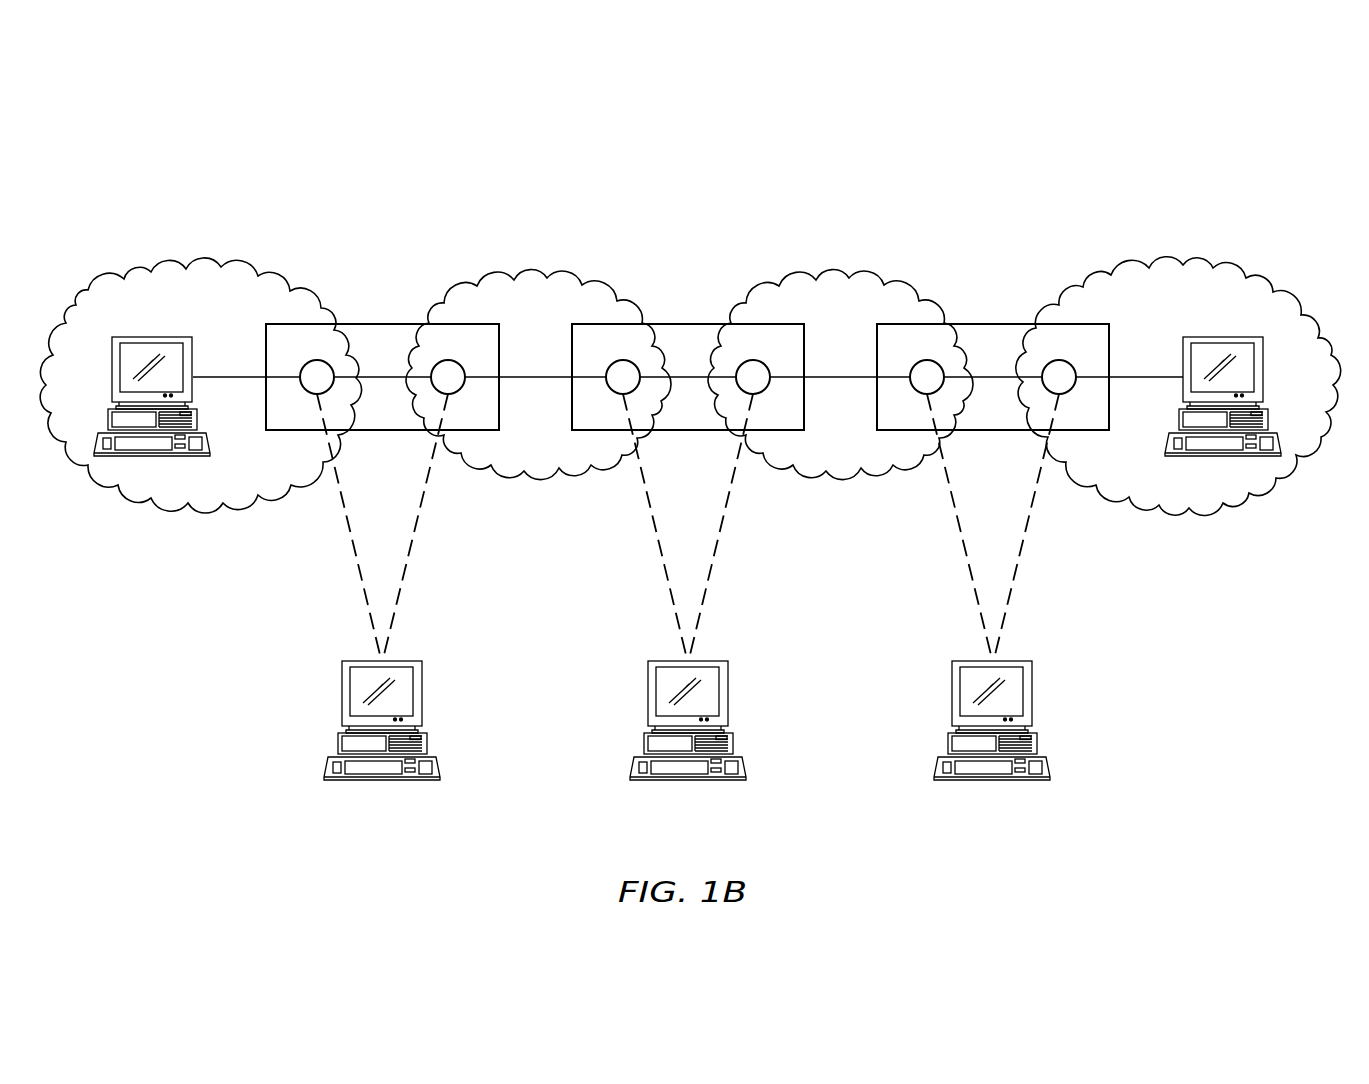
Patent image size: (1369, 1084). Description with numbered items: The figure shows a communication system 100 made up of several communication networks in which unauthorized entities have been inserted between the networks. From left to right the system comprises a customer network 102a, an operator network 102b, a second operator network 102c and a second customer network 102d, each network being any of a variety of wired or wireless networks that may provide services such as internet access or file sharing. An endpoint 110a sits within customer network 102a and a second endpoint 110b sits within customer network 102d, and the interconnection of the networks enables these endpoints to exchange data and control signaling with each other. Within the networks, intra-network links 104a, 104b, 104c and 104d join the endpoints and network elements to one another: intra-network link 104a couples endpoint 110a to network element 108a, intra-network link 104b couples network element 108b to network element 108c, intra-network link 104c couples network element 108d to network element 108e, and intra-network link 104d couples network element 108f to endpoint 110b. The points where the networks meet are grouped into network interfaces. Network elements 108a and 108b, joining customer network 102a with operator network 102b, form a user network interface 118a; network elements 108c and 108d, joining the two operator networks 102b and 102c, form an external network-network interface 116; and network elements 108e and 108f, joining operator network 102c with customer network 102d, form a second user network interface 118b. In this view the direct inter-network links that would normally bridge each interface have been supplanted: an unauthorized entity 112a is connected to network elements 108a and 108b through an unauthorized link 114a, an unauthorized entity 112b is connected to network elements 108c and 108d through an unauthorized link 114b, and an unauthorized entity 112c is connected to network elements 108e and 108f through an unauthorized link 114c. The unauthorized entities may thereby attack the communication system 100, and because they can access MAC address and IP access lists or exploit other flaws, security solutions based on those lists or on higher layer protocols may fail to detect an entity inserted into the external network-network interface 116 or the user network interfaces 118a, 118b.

The communication system 100 is at (198, 163).
The customer network 102a is at (133, 274).
The operator network 102b is at (540, 279).
The operator network 102c is at (838, 279).
The customer network 102d is at (1285, 290).
The intra-network link 104a is at (233, 377).
The intra-network link 104b is at (517, 373).
The intra-network link 104c is at (822, 377).
The intra-network link 104d is at (1137, 377).
The network element 108a is at (329, 365).
The network element 108b is at (436, 364).
The network element 108c is at (635, 365).
The network element 108d is at (741, 364).
The network element 108e is at (939, 365).
The network element 108f is at (1047, 364).
The endpoint 110a is at (165, 337).
The endpoint 110b is at (1203, 336).
The unauthorized entity 112a is at (410, 780).
The unauthorized entity 112b is at (713, 780).
The unauthorized entity 112c is at (1032, 780).
The unauthorized link 114a is at (354, 548).
The unauthorized link 114b is at (662, 552).
The unauthorized link 114c is at (967, 550).
The external network-network interface 116 is at (708, 423).
The user network interface 118a is at (412, 423).
The user network interface 118b is at (1022, 423).